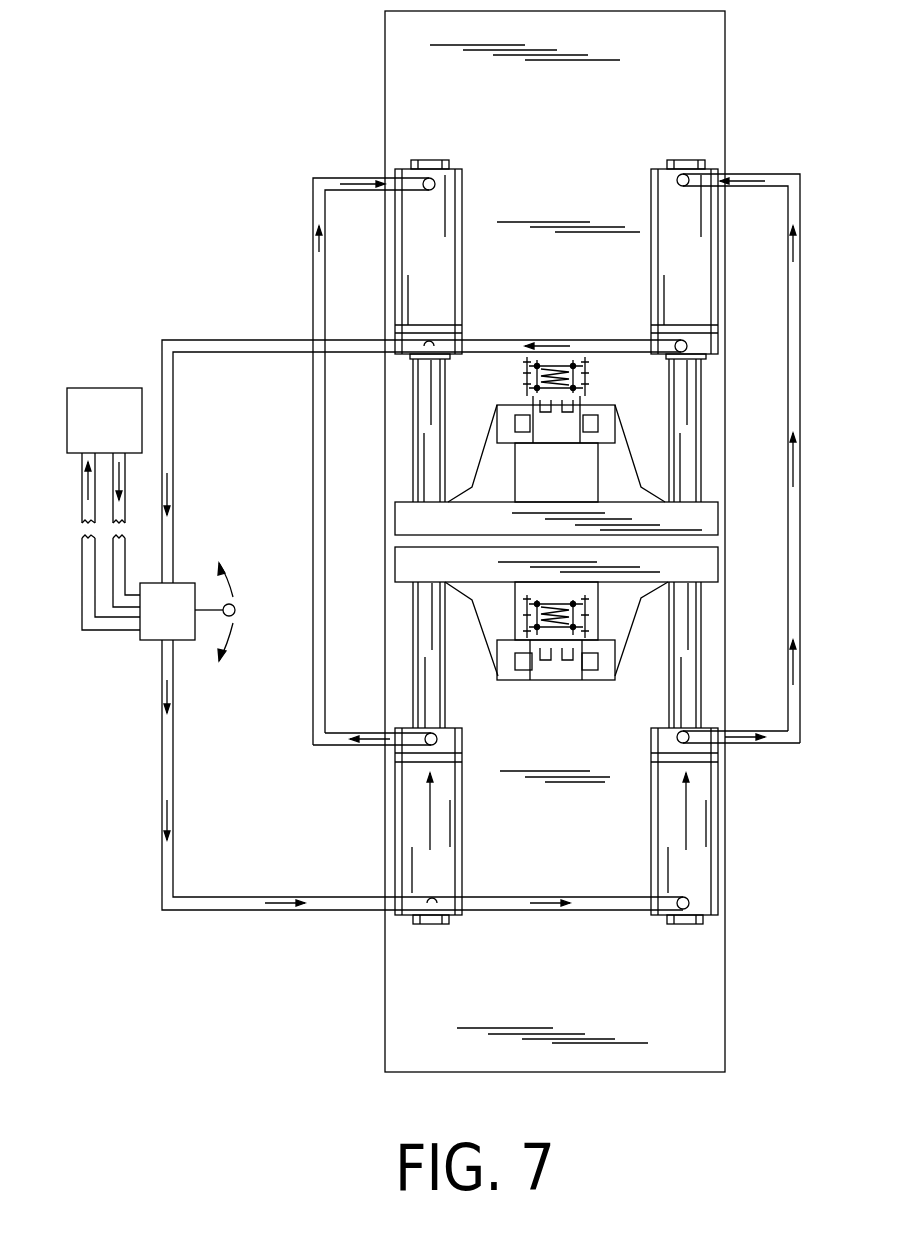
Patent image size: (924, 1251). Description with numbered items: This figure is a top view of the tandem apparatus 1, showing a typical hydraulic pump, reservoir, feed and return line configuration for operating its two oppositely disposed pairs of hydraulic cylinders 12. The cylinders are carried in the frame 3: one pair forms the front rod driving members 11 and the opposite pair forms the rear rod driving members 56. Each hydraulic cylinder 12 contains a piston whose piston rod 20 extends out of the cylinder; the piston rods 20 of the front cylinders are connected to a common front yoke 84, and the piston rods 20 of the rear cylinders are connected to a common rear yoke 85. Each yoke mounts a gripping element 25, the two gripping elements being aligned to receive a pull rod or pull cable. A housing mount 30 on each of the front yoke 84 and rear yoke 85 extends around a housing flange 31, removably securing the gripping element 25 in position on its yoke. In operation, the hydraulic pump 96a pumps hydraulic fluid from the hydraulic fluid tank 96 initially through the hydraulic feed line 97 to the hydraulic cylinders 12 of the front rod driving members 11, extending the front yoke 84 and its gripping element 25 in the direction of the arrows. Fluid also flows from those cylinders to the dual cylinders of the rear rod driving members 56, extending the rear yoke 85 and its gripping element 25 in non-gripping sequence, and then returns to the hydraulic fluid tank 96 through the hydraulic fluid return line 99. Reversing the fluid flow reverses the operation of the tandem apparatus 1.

The tandem apparatus 1 is at (745, 90).
The frame 3 is at (728, 161).
The front rod driving members 11 is at (685, 933).
The hydraulic cylinders 12 is at (442, 264).
The piston rod 20 is at (668, 162).
The gripping element 25 is at (599, 401).
The housing mount 30 is at (505, 444).
The housing flange 31 is at (522, 425).
The rear rod driving members 56 is at (680, 157).
The front yoke 84 is at (492, 581).
The rear yoke 85 is at (492, 527).
The hydraulic fluid tank 96 is at (190, 575).
The hydraulic pump 96a is at (60, 411).
The hydraulic feed line 97 is at (227, 897).
The hydraulic fluid return line 99 is at (560, 338).